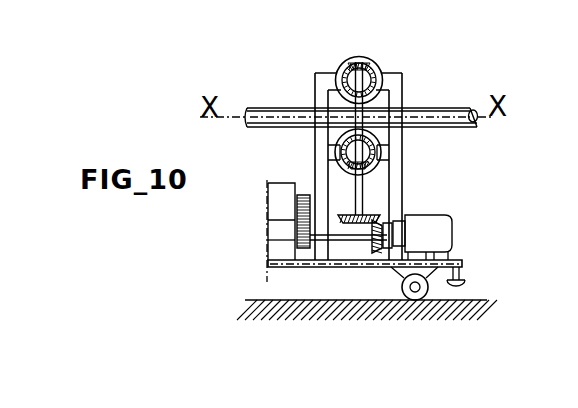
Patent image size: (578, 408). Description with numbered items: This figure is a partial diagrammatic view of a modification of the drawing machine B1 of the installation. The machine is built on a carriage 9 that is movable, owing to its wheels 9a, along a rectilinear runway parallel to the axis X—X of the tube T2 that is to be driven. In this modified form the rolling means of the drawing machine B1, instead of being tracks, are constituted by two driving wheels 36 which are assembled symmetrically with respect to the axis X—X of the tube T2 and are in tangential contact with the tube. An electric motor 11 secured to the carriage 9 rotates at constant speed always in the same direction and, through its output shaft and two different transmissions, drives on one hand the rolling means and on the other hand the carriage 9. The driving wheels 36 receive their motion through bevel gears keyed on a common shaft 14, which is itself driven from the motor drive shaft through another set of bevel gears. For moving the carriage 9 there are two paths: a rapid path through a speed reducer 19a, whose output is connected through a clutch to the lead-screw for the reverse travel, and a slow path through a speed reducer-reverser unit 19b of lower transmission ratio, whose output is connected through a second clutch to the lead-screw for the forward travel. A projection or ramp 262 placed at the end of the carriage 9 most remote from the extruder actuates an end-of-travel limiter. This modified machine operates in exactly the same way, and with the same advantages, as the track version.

The drawing machine B1 is at (414, 98).
The tube T2 is at (278, 113).
The driving wheels 36 is at (377, 100).
The common shaft 14 is at (360, 203).
The speed reducer-reverser unit 19b is at (285, 197).
The speed reducer 19a is at (278, 243).
The electric motor 11 is at (432, 228).
The carriage 9 is at (363, 267).
The wheels 9a is at (427, 297).
The projection or ramp 262 is at (463, 283).